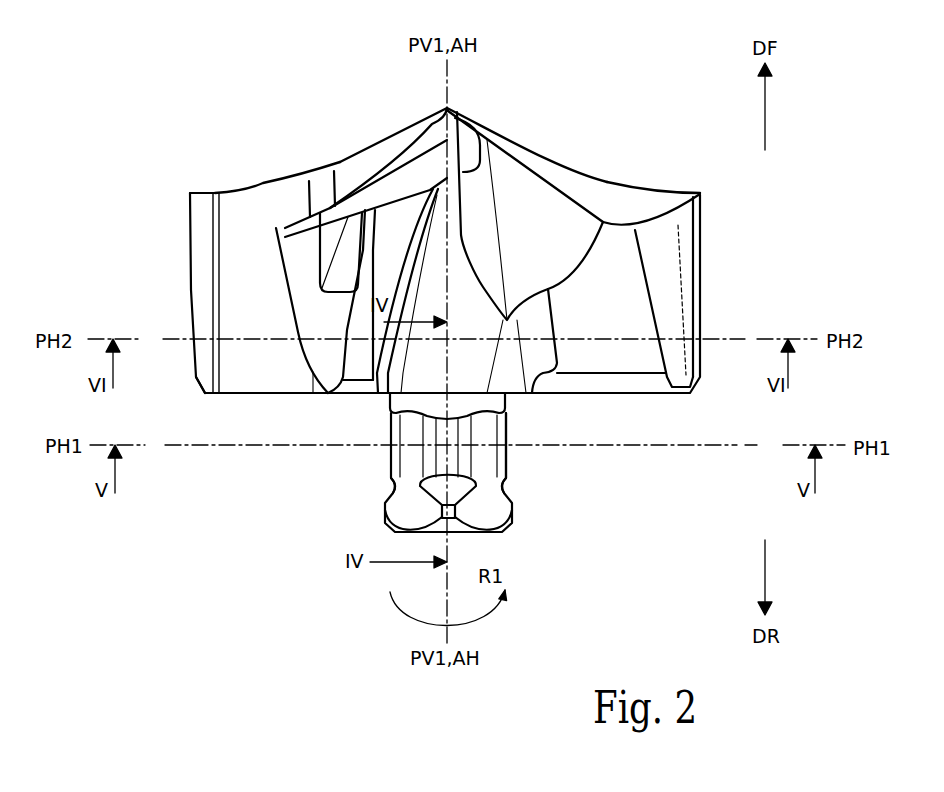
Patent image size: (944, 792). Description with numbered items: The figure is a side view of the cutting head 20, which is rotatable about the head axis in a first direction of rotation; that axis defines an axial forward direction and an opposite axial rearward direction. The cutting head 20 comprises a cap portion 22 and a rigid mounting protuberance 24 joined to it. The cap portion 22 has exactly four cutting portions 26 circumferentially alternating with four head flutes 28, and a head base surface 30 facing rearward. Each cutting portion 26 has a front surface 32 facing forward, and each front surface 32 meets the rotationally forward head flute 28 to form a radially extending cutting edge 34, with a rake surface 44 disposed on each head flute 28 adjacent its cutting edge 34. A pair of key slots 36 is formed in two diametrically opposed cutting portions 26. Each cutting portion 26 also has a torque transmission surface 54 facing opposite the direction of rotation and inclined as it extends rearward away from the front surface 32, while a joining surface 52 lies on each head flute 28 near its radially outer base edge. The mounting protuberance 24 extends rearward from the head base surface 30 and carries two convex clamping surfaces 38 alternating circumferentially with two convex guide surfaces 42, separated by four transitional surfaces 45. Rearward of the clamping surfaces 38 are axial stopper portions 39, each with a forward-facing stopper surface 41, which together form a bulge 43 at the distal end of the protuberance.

The cutting head 20 is at (548, 120).
The cap portion 22 is at (730, 248).
The rigid mounting protuberance 24 is at (550, 462).
The cutting portion 26 is at (320, 160).
The head flute 28 is at (262, 301).
The head base surface 30 is at (312, 404).
The front surface 32 is at (423, 193).
The cutting edge 34 is at (250, 190).
The key slot 36 is at (348, 232).
The clamping surface 38 is at (548, 462).
The axial stopper portion 39 is at (470, 514).
The stopper surface 41 is at (458, 493).
The guide surface 42 is at (388, 457).
The bulge 43 is at (372, 512).
The rake surface 44 is at (237, 210).
The transitional surface 45 is at (410, 423).
The joining surface 52 is at (247, 380).
The torque transmission surface 54 is at (618, 308).